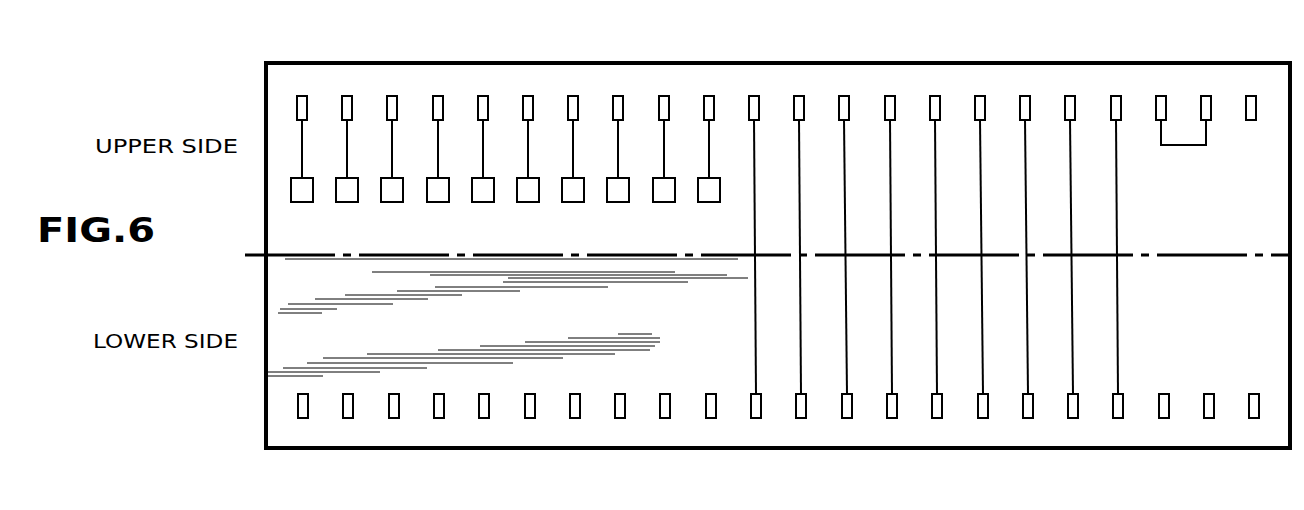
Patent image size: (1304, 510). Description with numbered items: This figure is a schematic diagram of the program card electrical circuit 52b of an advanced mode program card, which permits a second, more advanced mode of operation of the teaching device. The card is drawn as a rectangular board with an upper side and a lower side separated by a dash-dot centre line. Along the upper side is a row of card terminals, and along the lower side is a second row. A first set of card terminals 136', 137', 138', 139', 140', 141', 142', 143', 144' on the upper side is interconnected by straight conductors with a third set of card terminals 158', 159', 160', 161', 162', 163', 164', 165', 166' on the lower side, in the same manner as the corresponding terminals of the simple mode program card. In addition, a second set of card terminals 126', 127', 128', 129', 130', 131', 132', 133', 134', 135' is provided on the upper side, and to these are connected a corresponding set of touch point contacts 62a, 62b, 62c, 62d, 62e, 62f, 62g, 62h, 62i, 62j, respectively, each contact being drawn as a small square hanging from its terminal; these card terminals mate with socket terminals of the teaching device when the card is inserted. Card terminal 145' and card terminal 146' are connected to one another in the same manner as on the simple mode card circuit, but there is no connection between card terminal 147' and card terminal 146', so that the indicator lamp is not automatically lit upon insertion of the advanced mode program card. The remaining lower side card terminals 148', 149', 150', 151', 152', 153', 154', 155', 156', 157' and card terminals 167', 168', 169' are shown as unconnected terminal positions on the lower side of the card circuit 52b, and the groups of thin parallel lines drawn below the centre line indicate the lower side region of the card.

The program card electrical circuit 52b is at (236, 380).
The touch point contact 62a is at (302, 202).
The touch point contact 62b is at (347, 202).
The touch point contact 62c is at (392, 202).
The touch point contact 62d is at (438, 202).
The touch point contact 62e is at (483, 202).
The touch point contact 62f is at (528, 202).
The touch point contact 62g is at (573, 202).
The touch point contact 62h is at (618, 202).
The touch point contact 62i is at (664, 202).
The touch point contact 62j is at (709, 202).
The card terminal 126' is at (304, 125).
The card terminal 127' is at (349, 125).
The card terminal 128' is at (394, 125).
The card terminal 129' is at (440, 125).
The card terminal 130' is at (485, 125).
The card terminal 131' is at (530, 125).
The card terminal 132' is at (575, 125).
The card terminal 133' is at (620, 125).
The card terminal 134' is at (666, 125).
The card terminal 135' is at (711, 125).
The card terminal 136' is at (756, 233).
The card terminal 137' is at (801, 233).
The card terminal 138' is at (846, 233).
The card terminal 139' is at (892, 233).
The card terminal 140' is at (937, 233).
The card terminal 141' is at (982, 233).
The card terminal 142' is at (1027, 233).
The card terminal 143' is at (1072, 233).
The card terminal 144' is at (1118, 233).
The card terminal 145' is at (1176, 109).
The card terminal 146' is at (1208, 96).
The card terminal 147' is at (1253, 96).
The lower side terminal 148' is at (305, 419).
The lower side terminal 149' is at (350, 419).
The lower side terminal 150' is at (396, 419).
The lower side terminal 151' is at (441, 419).
The lower side terminal 152' is at (486, 419).
The lower side terminal 153' is at (532, 419).
The lower side terminal 154' is at (577, 419).
The lower side terminal 155' is at (622, 419).
The lower side terminal 156' is at (667, 419).
The lower side terminal 157' is at (713, 419).
The card terminal 158' is at (758, 419).
The card terminal 159' is at (803, 419).
The card terminal 160' is at (849, 419).
The card terminal 161' is at (894, 419).
The card terminal 162' is at (939, 419).
The card terminal 163' is at (985, 419).
The card terminal 164' is at (1030, 419).
The card terminal 165' is at (1075, 419).
The card terminal 166' is at (1120, 419).
The lower side terminal 167' is at (1166, 419).
The lower side terminal 168' is at (1211, 419).
The lower side terminal 169' is at (1256, 419).